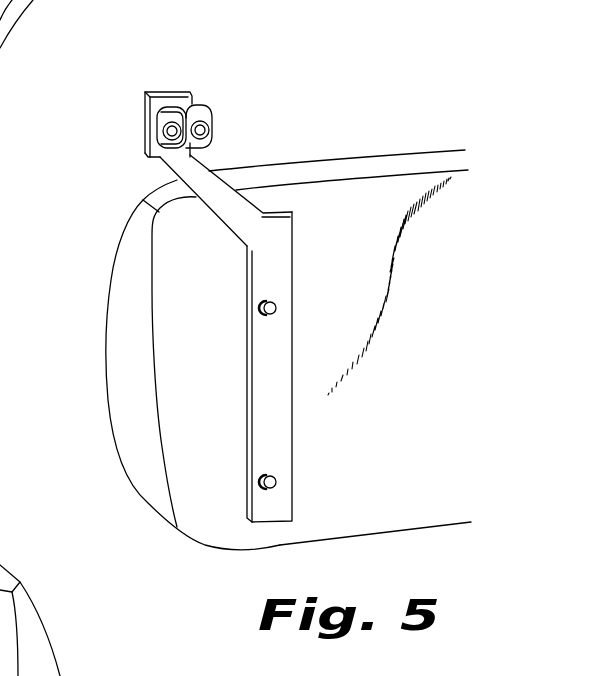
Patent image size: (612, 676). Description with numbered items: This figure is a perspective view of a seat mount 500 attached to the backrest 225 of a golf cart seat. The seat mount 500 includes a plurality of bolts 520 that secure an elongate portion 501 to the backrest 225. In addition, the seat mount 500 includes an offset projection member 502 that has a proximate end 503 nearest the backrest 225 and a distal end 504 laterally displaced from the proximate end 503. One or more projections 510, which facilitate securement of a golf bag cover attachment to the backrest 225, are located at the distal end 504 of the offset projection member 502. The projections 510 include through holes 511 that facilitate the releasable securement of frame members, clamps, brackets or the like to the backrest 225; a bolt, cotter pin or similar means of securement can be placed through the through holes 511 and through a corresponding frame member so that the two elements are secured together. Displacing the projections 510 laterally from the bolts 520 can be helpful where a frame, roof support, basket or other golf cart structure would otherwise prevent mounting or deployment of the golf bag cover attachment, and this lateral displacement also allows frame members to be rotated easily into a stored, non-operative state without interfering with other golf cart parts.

The backrest 225 is at (440, 385).
The seat mount 500 is at (275, 338).
The elongate portion 501 is at (267, 435).
The offset projection member 502 is at (247, 223).
The proximate end 503 is at (232, 207).
The distal end 504 is at (168, 156).
The projections 510 is at (197, 91).
The through holes 511 is at (200, 130).
The bolts 520 is at (275, 306).